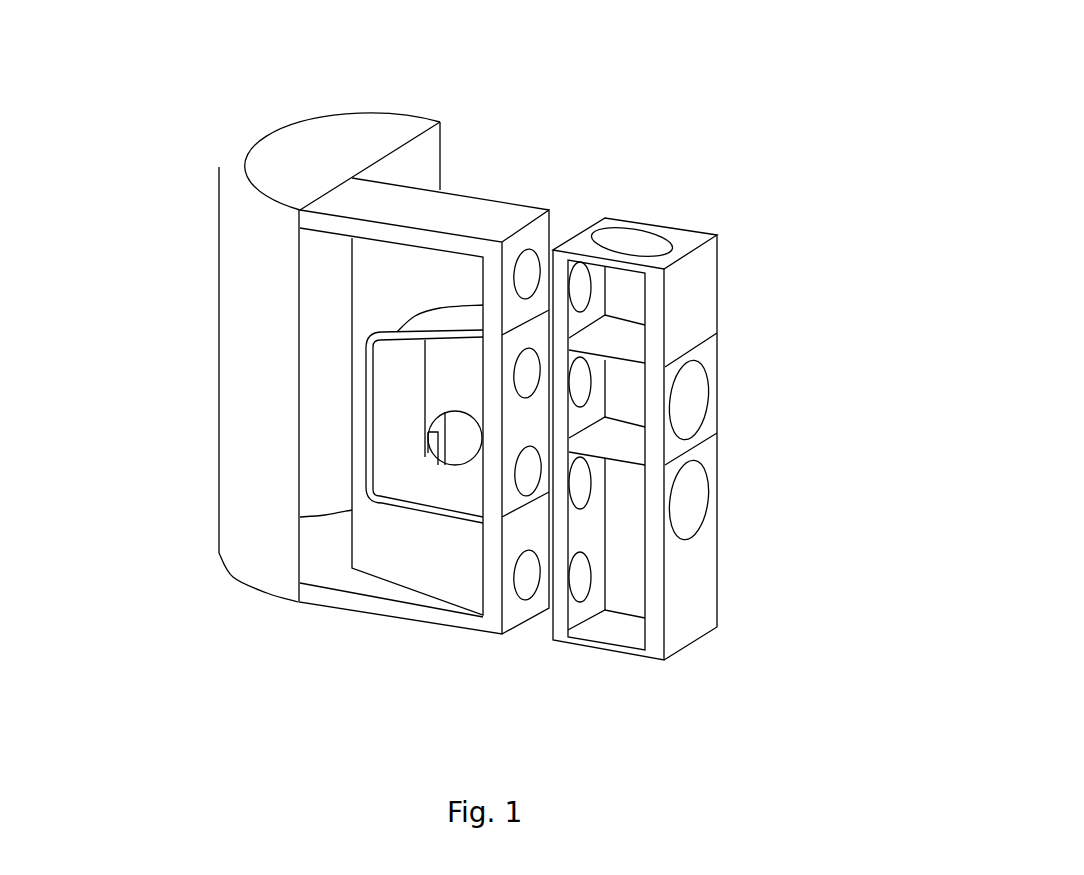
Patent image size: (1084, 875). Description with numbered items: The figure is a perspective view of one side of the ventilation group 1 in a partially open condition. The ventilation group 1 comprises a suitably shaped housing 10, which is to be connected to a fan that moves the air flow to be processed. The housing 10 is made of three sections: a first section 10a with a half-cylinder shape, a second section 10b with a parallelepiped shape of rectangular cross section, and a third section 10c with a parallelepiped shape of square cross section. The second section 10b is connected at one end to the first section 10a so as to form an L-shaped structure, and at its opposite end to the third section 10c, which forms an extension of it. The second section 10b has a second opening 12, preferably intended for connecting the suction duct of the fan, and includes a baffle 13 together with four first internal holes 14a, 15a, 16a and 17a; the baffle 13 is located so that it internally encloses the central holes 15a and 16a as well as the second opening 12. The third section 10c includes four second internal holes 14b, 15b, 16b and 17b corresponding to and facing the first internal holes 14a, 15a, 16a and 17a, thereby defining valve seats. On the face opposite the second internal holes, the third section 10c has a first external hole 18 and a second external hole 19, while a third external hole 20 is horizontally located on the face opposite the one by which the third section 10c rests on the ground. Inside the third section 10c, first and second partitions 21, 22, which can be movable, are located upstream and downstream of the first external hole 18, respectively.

The ventilation group 1 is at (176, 531).
The housing 10 is at (232, 613).
The first section 10a is at (268, 290).
The second section 10b is at (405, 278).
The third section 10c is at (627, 593).
The second opening 12 is at (460, 435).
The baffle 13 is at (393, 412).
The first internal hole 14a is at (527, 258).
The second internal hole 14b is at (580, 270).
The first internal hole 15a is at (522, 365).
The second internal hole 15b is at (580, 383).
The first internal hole 16a is at (525, 463).
The second internal hole 16b is at (580, 482).
The first internal hole 17a is at (525, 600).
The second internal hole 17b is at (580, 577).
The first external hole 18 is at (692, 413).
The second external hole 19 is at (683, 508).
The third external hole 20 is at (643, 241).
The first partition 21 is at (630, 342).
The second partition 22 is at (627, 447).